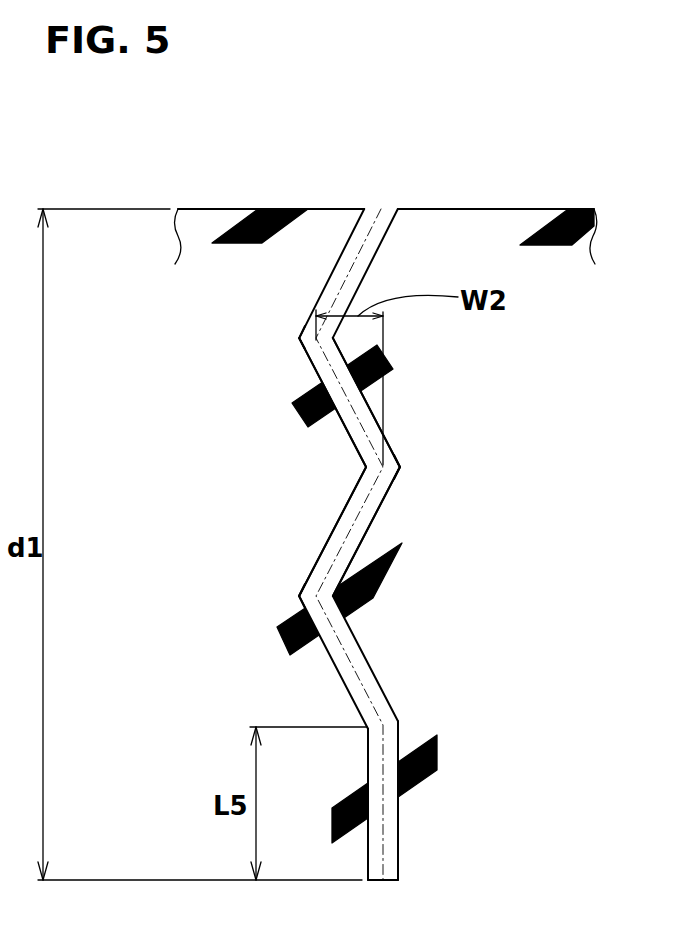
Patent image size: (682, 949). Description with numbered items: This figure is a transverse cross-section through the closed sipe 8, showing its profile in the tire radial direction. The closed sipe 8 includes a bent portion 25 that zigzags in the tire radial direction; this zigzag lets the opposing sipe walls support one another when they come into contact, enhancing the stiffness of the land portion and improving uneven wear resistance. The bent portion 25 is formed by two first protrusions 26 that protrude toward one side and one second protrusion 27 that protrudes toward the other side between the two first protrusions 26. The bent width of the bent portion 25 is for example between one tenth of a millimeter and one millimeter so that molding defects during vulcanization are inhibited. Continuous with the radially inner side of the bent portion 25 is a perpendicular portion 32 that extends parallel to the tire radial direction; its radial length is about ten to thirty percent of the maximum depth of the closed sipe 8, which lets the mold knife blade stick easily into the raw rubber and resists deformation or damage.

The closed sipe 8 is at (358, 186).
The bent portion 25 is at (339, 533).
The first protrusions 26 is at (307, 332).
The second protrusion 27 is at (397, 464).
The perpendicular portion 32 is at (392, 833).